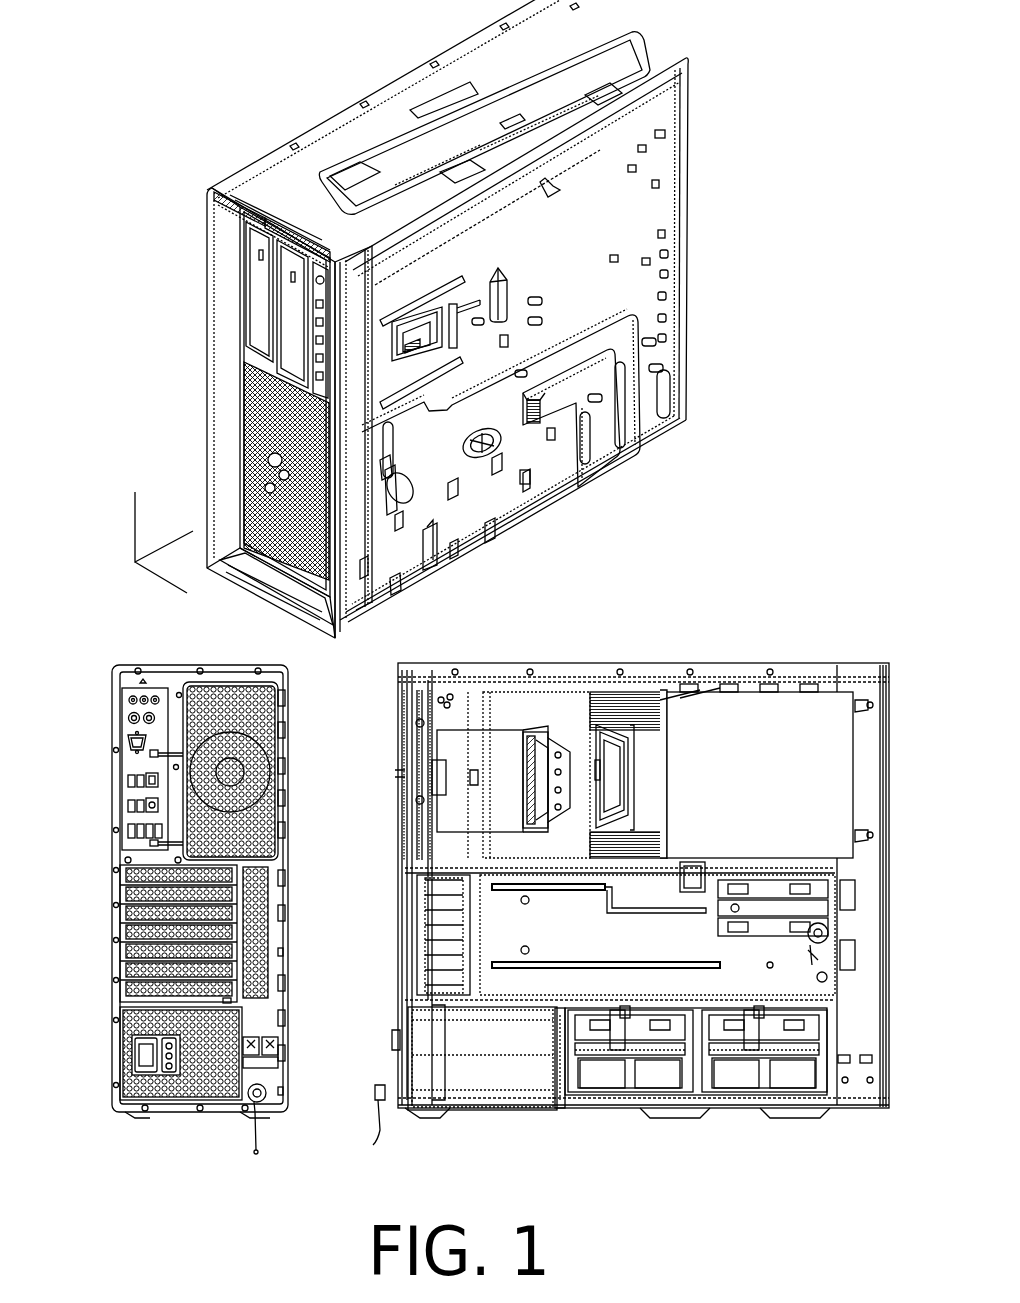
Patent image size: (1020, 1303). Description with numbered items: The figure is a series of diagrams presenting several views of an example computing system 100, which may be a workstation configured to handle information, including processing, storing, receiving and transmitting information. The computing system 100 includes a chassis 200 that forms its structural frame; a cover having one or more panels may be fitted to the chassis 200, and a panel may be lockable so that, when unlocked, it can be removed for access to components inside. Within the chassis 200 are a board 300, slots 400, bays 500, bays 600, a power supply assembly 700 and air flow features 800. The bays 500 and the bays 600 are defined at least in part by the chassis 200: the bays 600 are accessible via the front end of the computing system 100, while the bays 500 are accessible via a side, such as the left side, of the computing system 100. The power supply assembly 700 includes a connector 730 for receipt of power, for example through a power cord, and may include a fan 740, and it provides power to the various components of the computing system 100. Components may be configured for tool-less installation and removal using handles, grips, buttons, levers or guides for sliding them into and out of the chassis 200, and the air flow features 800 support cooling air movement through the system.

The computing system 100 is at (303, 70).
The chassis 200 is at (592, 494).
The board 300 is at (665, 682).
The slots 400 is at (122, 952).
The bays 500 is at (738, 1097).
The bays 600 is at (235, 326).
The power supply assembly 700 is at (487, 1078).
The connector 730 is at (148, 1062).
The fan 740 is at (197, 1077).
The air flow features 800 is at (523, 700).